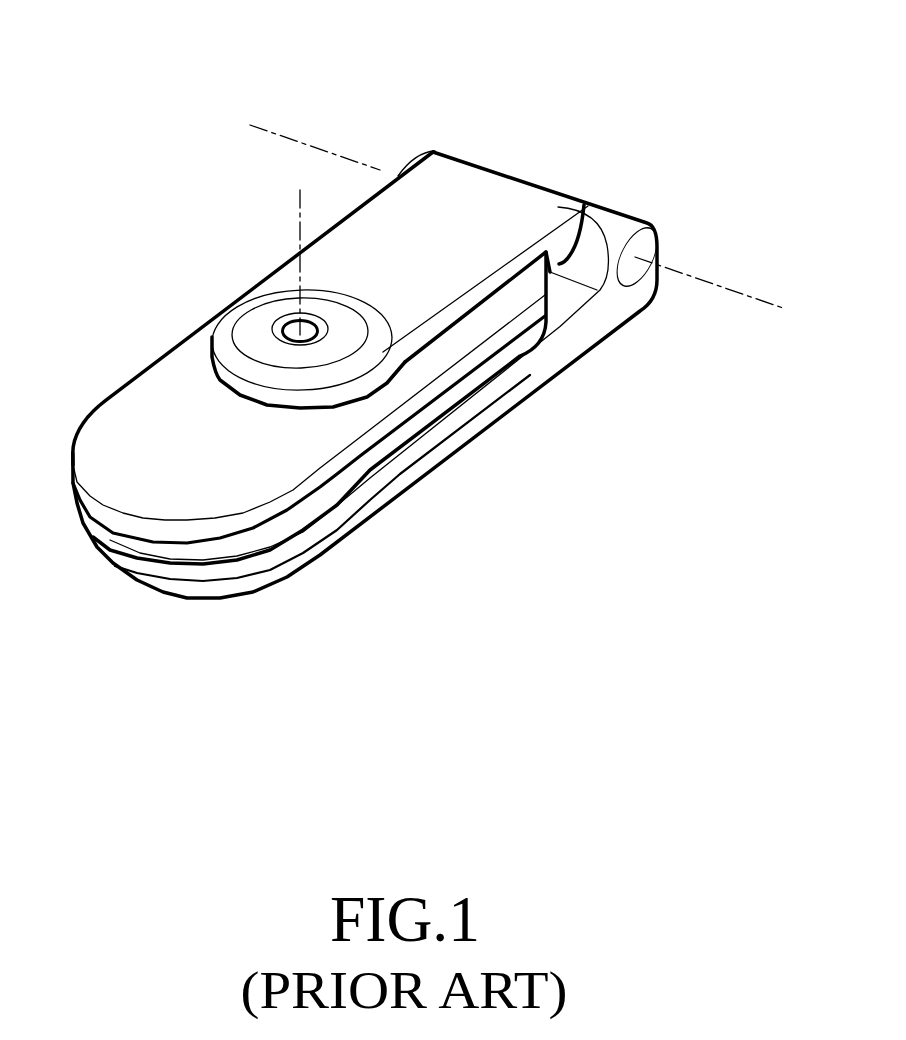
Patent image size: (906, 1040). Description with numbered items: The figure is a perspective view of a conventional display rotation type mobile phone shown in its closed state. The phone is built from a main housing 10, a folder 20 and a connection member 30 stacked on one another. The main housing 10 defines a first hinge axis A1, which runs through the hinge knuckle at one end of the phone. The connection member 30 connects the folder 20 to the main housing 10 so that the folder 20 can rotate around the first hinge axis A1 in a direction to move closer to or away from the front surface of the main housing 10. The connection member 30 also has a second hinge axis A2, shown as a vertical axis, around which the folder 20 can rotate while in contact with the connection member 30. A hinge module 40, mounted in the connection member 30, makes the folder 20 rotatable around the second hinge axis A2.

The main housing 10 is at (398, 492).
The folder 20 is at (430, 419).
The connection member 30 is at (405, 262).
The hinge module 40 is at (200, 335).
The first hinge axis A1 is at (717, 287).
The second hinge axis A2 is at (297, 209).